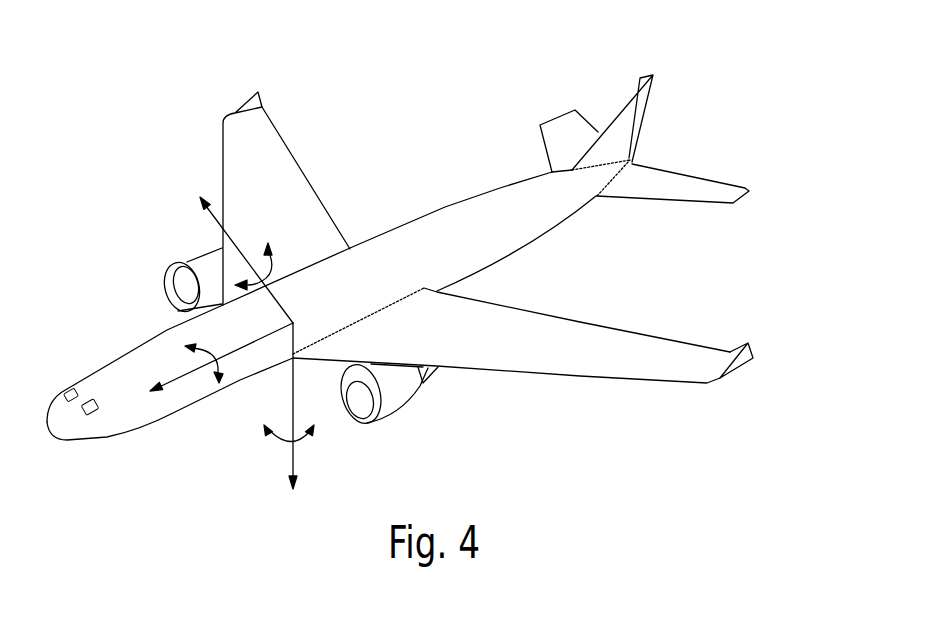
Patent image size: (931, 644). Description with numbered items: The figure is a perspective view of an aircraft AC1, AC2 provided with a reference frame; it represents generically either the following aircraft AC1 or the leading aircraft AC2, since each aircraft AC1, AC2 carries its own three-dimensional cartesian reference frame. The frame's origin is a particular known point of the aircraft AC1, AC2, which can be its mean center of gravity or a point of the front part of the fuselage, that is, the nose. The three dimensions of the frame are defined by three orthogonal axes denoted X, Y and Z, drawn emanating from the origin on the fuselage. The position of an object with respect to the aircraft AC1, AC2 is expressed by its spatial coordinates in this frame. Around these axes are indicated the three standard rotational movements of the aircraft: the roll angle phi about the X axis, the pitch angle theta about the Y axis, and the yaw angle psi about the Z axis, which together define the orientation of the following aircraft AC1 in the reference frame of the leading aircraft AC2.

The following aircraft AC1 is at (435, 257).
The leading aircraft AC2 is at (613, 268).
The X axis X is at (214, 365).
The Y axis Y is at (236, 253).
The Z axis Z is at (303, 410).